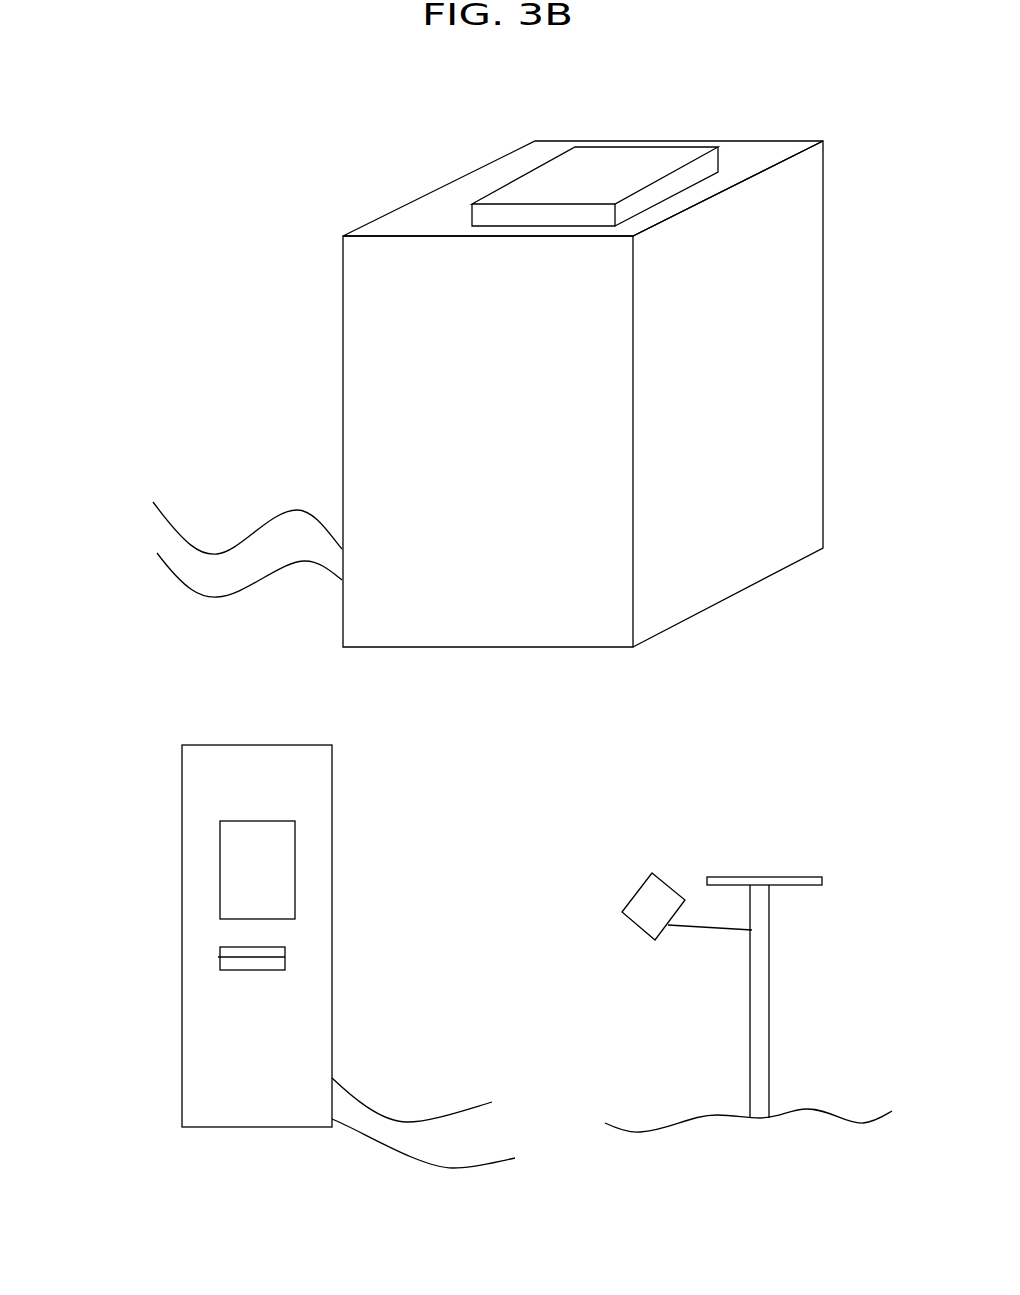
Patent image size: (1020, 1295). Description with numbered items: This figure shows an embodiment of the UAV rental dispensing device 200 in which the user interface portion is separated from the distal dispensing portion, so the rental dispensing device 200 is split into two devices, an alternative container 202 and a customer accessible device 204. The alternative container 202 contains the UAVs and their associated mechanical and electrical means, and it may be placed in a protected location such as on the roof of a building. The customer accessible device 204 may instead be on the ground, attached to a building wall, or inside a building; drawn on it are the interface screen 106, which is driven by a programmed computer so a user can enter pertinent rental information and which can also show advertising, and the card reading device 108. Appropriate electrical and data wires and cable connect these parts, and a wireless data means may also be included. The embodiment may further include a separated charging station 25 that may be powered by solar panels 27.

The rental dispensing device 200 is at (305, 233).
The alternative container 202 is at (273, 432).
The customer accessible device 204 is at (285, 931).
The interface screen 106 is at (258, 857).
The card reading device 108 is at (283, 958).
The charging station 25 is at (750, 877).
The solar panels 27 is at (645, 902).